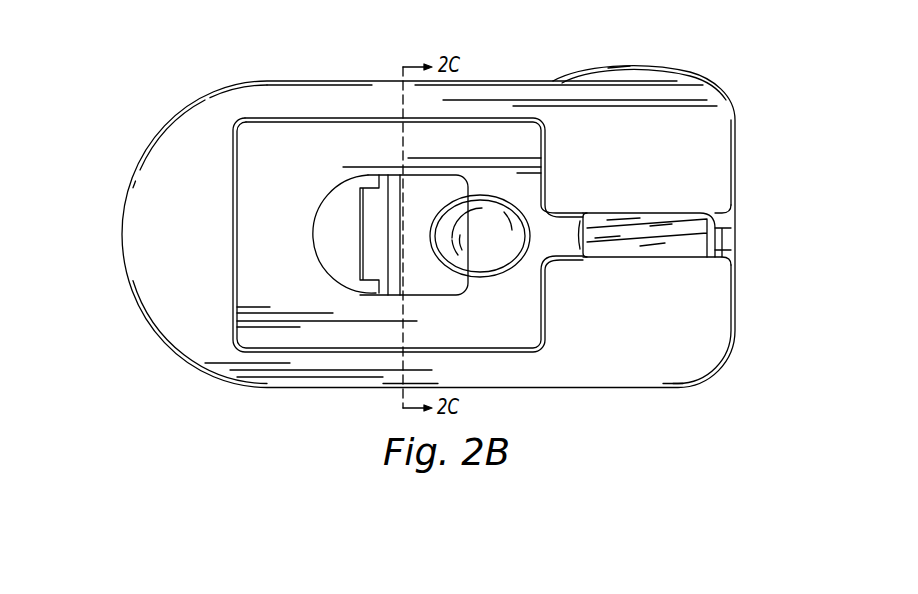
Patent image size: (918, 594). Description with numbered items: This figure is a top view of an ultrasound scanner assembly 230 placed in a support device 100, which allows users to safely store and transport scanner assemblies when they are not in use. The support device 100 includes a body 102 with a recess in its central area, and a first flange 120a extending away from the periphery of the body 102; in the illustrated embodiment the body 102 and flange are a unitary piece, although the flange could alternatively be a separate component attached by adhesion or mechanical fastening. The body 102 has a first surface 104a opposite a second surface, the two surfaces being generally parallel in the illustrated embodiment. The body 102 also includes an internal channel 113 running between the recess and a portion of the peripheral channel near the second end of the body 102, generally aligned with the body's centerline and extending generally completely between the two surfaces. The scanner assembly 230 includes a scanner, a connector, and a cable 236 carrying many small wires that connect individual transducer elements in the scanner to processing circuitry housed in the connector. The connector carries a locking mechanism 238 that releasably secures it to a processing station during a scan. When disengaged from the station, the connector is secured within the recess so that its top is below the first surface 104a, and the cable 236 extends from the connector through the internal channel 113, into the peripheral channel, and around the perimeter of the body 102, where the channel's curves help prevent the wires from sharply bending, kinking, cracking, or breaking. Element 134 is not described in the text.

The support device 100 is at (740, 156).
The body 102 is at (148, 252).
The first surface 104a is at (680, 352).
The internal channel 113 is at (690, 248).
The first flange 120a is at (168, 124).
The drive frame 134 is at (327, 138).
The ultrasound scanner assembly 230 is at (725, 71).
The cable 236 is at (700, 225).
The locking mechanism 238 is at (418, 215).